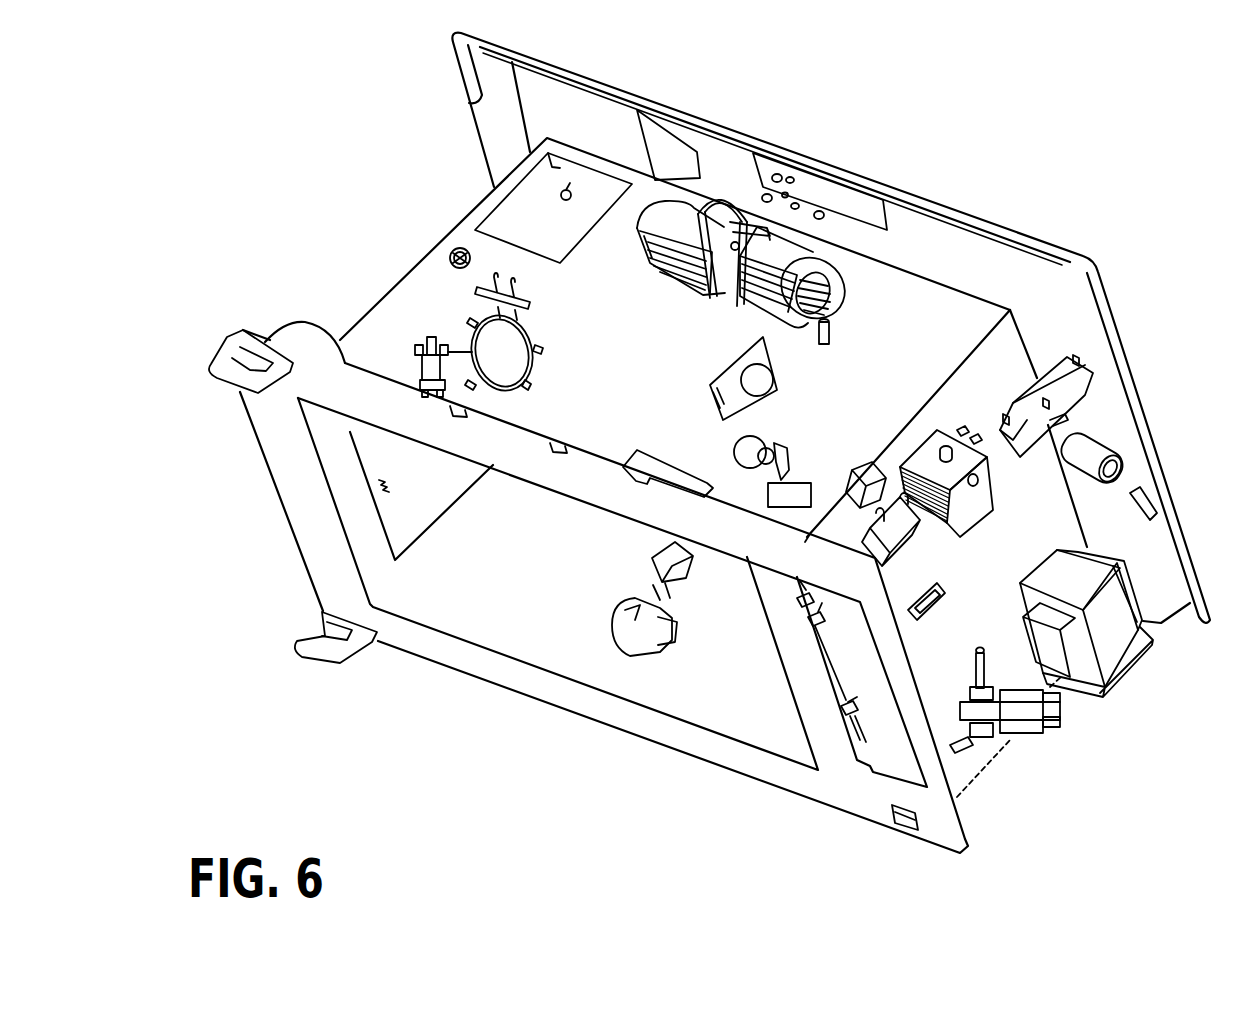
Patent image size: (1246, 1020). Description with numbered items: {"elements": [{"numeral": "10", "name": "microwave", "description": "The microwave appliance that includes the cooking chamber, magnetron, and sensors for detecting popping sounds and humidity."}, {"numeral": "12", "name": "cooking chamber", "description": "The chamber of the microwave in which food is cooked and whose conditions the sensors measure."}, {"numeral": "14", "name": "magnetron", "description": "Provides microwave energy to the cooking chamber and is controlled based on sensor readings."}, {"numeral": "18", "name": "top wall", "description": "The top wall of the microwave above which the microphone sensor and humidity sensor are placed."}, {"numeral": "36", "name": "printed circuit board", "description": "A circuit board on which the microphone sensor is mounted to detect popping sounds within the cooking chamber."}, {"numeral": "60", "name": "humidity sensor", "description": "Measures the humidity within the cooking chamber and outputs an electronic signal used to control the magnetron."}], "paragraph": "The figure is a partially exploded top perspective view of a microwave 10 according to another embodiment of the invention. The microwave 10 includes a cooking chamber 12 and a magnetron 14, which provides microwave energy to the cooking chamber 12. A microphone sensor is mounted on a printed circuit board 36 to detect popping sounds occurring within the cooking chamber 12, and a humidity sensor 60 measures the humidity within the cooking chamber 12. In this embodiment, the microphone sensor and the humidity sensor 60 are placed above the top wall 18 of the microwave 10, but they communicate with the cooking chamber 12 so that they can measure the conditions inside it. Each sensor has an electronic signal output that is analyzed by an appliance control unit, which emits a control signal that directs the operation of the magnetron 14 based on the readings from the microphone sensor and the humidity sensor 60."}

The cooking appliance 10 is at (872, 119).
The frame 12 is at (511, 603).
The fan 14 is at (690, 222).
The top cover 18 is at (925, 322).
The controller 36 is at (777, 502).
The fastener 60 is at (450, 259).